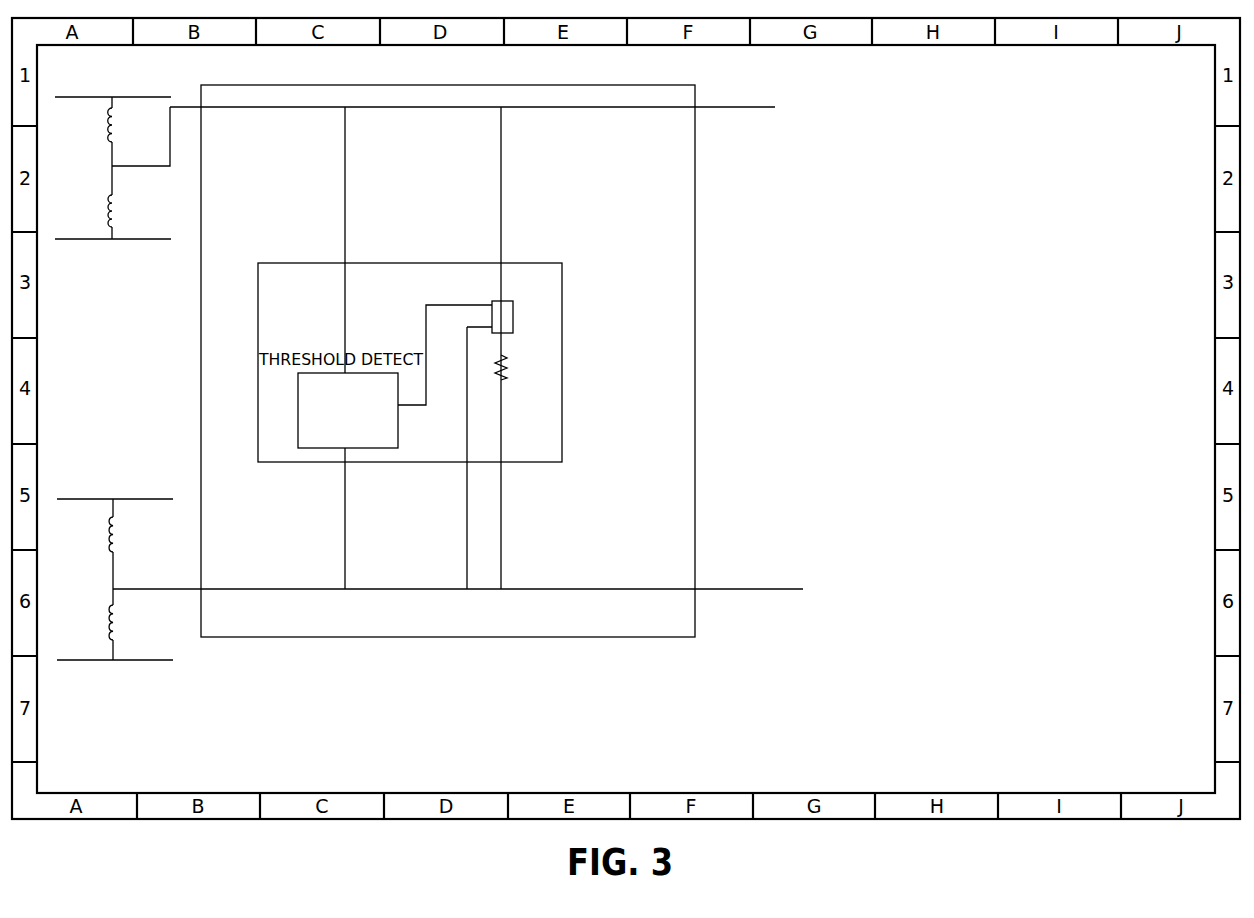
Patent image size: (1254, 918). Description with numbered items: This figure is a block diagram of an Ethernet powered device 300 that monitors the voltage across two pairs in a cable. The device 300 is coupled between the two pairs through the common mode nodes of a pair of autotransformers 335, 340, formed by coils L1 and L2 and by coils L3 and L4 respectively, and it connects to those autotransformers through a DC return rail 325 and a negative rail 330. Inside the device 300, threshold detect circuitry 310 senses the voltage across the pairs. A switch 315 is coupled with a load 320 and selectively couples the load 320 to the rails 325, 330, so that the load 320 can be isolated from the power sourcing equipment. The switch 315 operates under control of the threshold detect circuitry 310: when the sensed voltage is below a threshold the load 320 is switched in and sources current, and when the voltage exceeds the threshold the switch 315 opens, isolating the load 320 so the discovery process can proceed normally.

The Ethernet powered device 300 is at (562, 454).
The threshold detect circuitry 310 is at (370, 419).
The switch 315 is at (518, 318).
The load 320 is at (512, 372).
The DC return rail 325 is at (755, 107).
The negative rail 330 is at (785, 589).
The autotransformer 335 is at (108, 246).
The autotransformer 340 is at (107, 497).